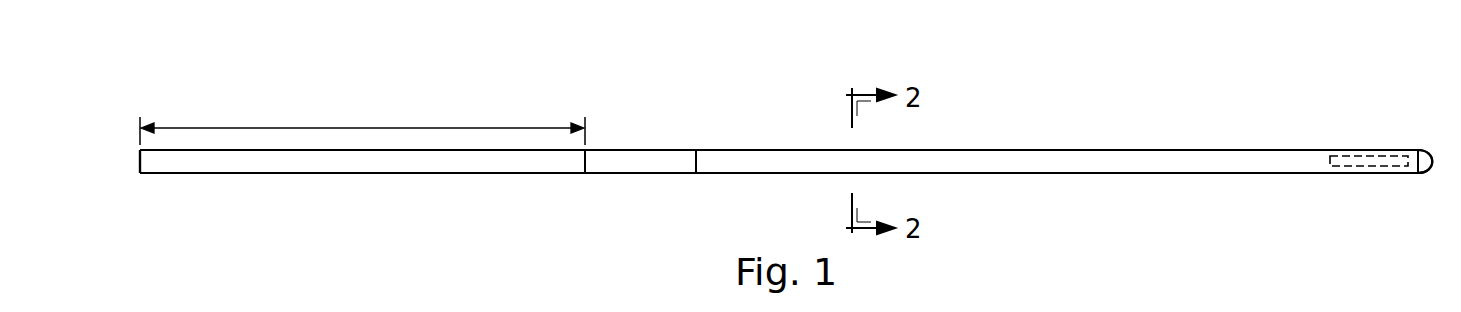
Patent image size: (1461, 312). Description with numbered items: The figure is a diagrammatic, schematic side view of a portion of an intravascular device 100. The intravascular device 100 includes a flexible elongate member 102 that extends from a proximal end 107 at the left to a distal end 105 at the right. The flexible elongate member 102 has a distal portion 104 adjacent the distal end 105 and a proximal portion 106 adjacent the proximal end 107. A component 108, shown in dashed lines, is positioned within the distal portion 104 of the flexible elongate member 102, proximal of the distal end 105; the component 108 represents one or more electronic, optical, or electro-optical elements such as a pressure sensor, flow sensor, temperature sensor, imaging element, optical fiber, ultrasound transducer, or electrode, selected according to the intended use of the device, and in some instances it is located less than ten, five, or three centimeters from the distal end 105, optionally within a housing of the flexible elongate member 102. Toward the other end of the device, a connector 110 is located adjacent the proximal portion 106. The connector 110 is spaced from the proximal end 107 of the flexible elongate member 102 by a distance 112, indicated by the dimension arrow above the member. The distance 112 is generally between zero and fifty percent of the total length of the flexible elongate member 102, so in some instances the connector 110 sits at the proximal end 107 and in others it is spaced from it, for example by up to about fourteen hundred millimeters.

The intravascular device 100 is at (988, 104).
The flexible elongate member 102 is at (1097, 174).
The distal portion 104 is at (1372, 192).
The distal end 105 is at (1436, 158).
The proximal portion 106 is at (232, 192).
The proximal end 107 is at (140, 161).
The component 108 is at (1362, 152).
The connector 110 is at (641, 157).
The distance 112 is at (362, 125).